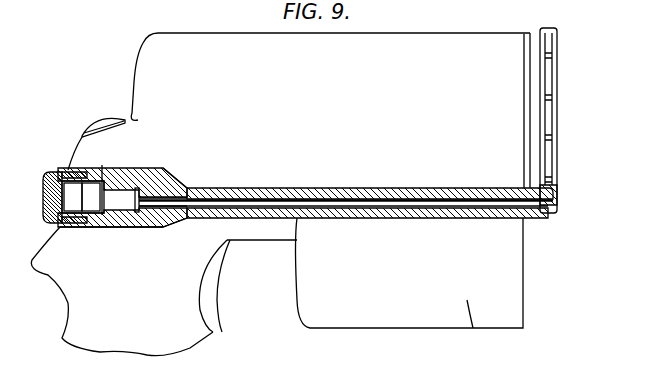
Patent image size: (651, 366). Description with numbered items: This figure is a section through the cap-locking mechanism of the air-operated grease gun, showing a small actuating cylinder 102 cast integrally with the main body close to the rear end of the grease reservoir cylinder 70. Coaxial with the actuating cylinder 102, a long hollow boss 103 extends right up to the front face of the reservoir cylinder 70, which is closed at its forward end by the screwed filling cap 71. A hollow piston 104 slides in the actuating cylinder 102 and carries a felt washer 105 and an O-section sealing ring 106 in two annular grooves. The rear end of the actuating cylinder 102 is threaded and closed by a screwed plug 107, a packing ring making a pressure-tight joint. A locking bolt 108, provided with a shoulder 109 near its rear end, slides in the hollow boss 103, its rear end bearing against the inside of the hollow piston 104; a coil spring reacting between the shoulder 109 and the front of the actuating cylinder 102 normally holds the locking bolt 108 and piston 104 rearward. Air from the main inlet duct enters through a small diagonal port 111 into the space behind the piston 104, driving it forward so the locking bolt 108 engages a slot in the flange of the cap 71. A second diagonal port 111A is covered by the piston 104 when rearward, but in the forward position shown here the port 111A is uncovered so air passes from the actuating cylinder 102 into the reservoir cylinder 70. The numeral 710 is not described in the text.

The grease reservoir cylinder 70 is at (299, 110).
The screwed filling cap 71 is at (557, 75).
The actuating cylinder 102 is at (142, 168).
The hollow boss 103 is at (288, 190).
The hollow piston 104 is at (162, 222).
The felt washer 105 is at (106, 216).
The sealing ring 106 is at (140, 218).
The screwed plug 107 is at (50, 214).
The locking bolt 108 is at (442, 199).
The shoulder 109 is at (160, 190).
The small diagonal port 111 is at (88, 201).
The second diagonal port 111A is at (102, 164).
The nozzle portion 710 is at (172, 216).